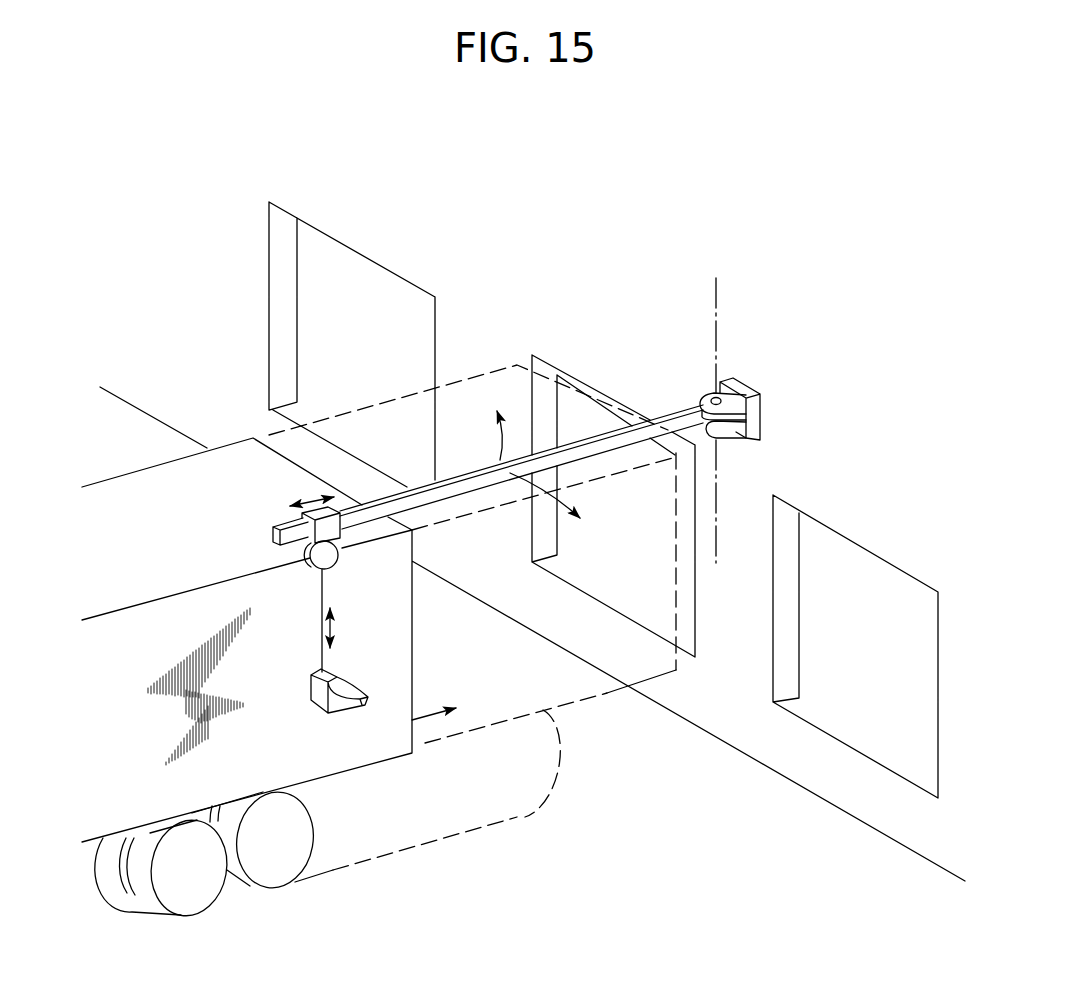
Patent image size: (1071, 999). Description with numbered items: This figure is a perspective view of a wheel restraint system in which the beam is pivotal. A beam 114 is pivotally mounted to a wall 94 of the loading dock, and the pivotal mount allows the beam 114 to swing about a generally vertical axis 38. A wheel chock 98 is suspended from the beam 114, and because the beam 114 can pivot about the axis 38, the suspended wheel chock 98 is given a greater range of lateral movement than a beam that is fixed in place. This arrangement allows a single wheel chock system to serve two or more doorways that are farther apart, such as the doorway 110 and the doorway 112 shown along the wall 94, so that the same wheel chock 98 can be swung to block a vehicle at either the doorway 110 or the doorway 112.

The vertical axis 38 is at (713, 310).
The wall 94 is at (723, 710).
The wheel chock 98 is at (311, 693).
The doorway 110 is at (650, 555).
The doorway 112 is at (870, 588).
The beam 114 is at (462, 474).